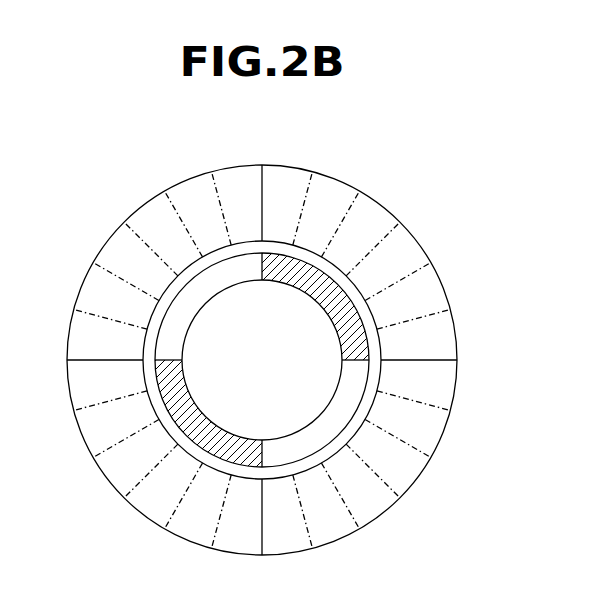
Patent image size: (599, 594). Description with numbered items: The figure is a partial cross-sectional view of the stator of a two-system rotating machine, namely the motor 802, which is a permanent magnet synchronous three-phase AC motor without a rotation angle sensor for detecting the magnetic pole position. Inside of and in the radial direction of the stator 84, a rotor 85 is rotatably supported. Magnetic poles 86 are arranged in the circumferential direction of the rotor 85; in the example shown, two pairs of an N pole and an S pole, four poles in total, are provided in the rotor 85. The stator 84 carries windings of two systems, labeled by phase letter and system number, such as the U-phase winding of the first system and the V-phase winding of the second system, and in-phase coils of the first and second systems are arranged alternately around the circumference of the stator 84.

The motor 802 is at (121, 175).
The stator 84 is at (328, 177).
The rotor 85 is at (260, 370).
The magnetic poles 86 is at (187, 385).